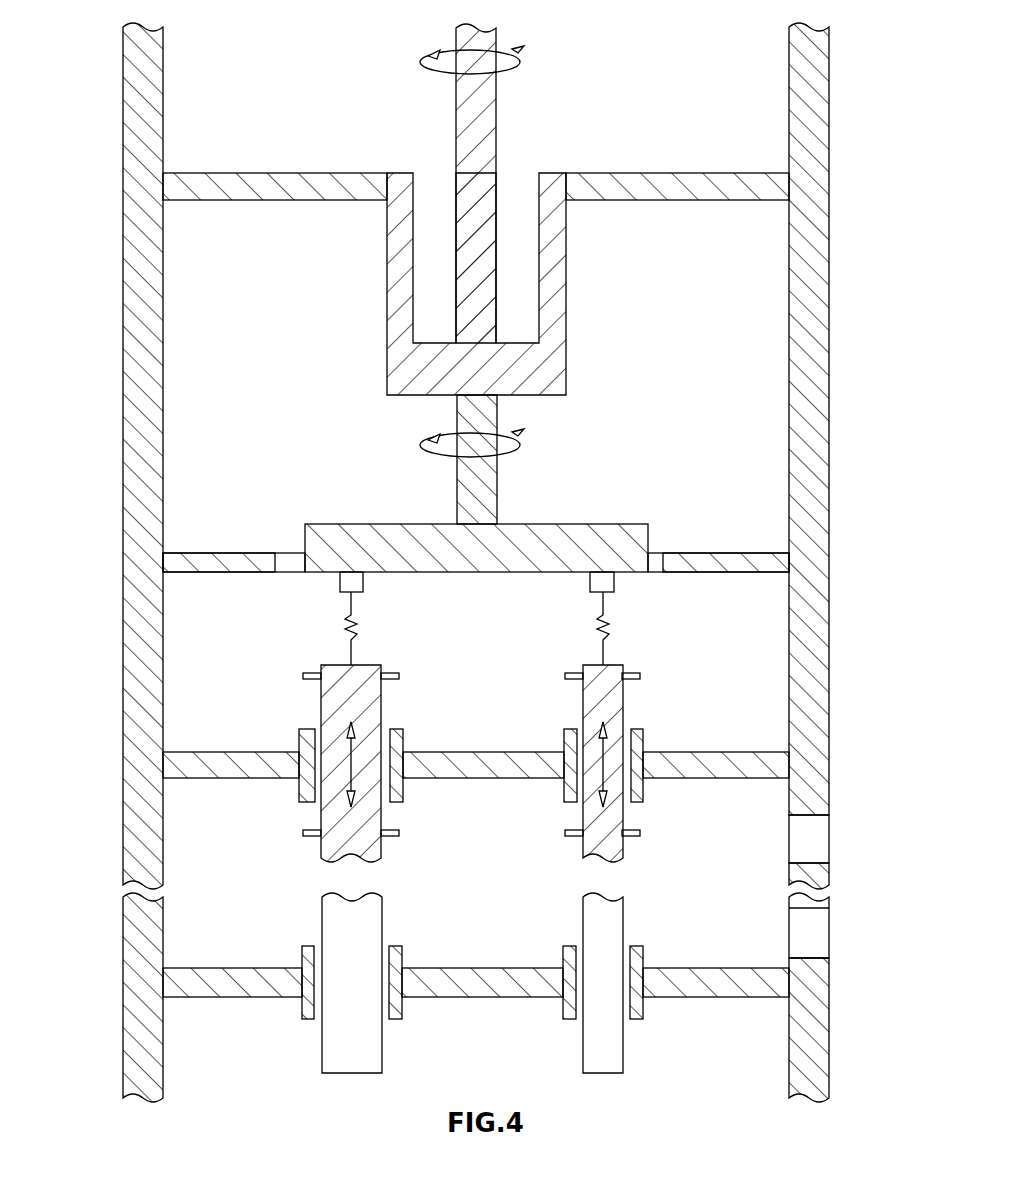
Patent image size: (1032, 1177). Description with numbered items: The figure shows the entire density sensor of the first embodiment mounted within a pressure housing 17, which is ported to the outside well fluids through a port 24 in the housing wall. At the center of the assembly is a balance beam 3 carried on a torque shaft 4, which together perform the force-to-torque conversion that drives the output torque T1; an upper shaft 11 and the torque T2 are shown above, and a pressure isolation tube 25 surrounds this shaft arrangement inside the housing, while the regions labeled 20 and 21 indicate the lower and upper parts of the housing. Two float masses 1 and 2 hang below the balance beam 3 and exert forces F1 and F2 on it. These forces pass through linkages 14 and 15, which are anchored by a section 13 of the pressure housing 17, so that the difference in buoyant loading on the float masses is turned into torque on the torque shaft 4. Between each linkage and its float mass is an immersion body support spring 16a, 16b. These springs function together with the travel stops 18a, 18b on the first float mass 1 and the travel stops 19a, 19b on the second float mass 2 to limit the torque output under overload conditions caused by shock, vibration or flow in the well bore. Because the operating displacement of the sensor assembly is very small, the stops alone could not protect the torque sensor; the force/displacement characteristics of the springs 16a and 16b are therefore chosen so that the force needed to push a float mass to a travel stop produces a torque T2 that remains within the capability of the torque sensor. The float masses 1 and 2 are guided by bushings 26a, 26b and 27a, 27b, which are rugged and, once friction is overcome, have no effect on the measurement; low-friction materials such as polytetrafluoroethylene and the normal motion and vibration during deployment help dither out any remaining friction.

The float mass 1 is at (318, 863).
The float mass 2 is at (626, 864).
The balance beam 3 is at (618, 524).
The torque shaft 4 is at (455, 487).
The drive shaft 11 is at (498, 138).
The section of the pressure housing 13 is at (708, 553).
The linkage 14 is at (366, 585).
The linkage 15 is at (589, 585).
The immersion body support spring 16a is at (344, 628).
The immersion body support spring 16b is at (609, 630).
The pressure housing 17 is at (165, 389).
The travel stop 18a is at (400, 676).
The travel stop 18b is at (399, 838).
The travel stop 19a is at (641, 676).
The travel stop 19b is at (566, 838).
The lower housing part 20 is at (232, 292).
The upper housing part 21 is at (230, 107).
The port 24 is at (830, 838).
The pressure isolation tube 25 is at (567, 282).
The bushing 26a is at (311, 790).
The bushing 26b is at (312, 1008).
The bushing 27a is at (642, 800).
The bushing 27b is at (643, 1013).
The force F1 is at (352, 751).
The force F2 is at (603, 751).
The output torque T1 is at (522, 441).
The torque T2 is at (522, 58).